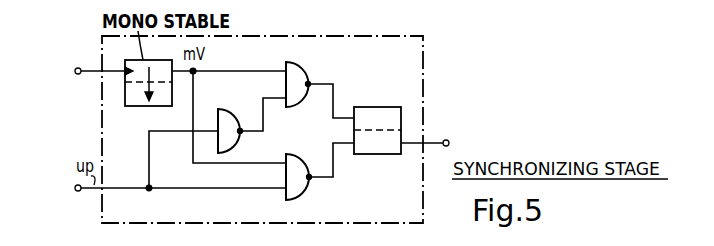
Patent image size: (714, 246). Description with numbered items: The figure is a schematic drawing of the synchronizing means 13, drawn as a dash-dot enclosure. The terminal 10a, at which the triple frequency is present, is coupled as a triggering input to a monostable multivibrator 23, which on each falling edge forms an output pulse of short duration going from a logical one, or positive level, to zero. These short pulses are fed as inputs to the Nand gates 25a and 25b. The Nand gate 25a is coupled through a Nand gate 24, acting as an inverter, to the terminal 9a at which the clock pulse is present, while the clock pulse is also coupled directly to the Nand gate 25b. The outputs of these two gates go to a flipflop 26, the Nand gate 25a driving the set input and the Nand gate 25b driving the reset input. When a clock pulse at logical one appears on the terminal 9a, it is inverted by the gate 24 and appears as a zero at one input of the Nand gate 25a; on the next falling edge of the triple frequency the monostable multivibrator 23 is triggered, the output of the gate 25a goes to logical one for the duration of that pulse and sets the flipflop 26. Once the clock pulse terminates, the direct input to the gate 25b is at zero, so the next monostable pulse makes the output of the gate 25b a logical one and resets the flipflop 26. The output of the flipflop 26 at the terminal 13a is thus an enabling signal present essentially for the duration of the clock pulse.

The synchronizing means 13 is at (423, 88).
The terminal 13a is at (443, 144).
The terminal 10a is at (86, 71).
The terminal 9a is at (166, 188).
The monostable multivibrator 23 is at (140, 107).
The Nand gate 24 is at (241, 135).
The Nand gate 25a is at (301, 62).
The Nand gate 25b is at (303, 155).
The flipflop 26 is at (365, 107).